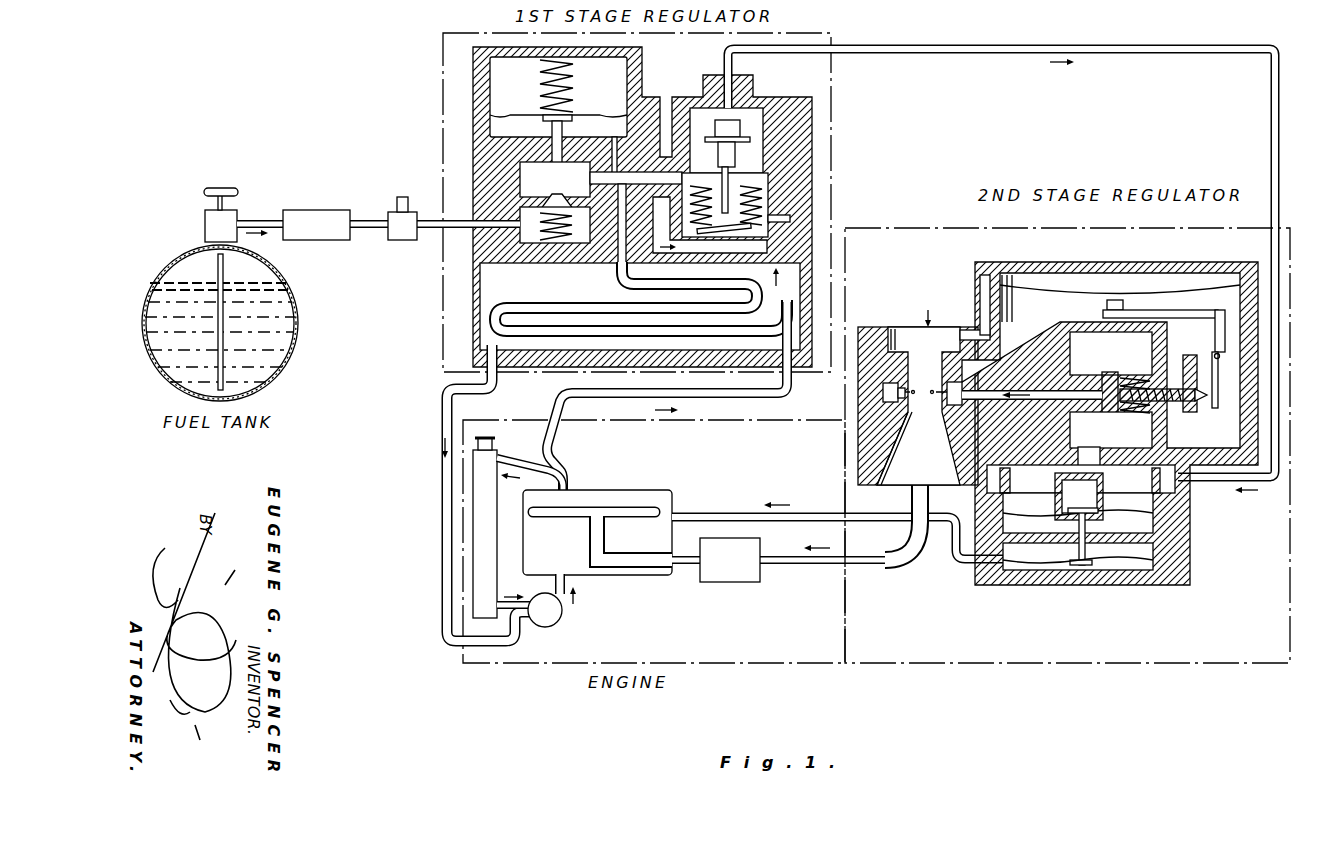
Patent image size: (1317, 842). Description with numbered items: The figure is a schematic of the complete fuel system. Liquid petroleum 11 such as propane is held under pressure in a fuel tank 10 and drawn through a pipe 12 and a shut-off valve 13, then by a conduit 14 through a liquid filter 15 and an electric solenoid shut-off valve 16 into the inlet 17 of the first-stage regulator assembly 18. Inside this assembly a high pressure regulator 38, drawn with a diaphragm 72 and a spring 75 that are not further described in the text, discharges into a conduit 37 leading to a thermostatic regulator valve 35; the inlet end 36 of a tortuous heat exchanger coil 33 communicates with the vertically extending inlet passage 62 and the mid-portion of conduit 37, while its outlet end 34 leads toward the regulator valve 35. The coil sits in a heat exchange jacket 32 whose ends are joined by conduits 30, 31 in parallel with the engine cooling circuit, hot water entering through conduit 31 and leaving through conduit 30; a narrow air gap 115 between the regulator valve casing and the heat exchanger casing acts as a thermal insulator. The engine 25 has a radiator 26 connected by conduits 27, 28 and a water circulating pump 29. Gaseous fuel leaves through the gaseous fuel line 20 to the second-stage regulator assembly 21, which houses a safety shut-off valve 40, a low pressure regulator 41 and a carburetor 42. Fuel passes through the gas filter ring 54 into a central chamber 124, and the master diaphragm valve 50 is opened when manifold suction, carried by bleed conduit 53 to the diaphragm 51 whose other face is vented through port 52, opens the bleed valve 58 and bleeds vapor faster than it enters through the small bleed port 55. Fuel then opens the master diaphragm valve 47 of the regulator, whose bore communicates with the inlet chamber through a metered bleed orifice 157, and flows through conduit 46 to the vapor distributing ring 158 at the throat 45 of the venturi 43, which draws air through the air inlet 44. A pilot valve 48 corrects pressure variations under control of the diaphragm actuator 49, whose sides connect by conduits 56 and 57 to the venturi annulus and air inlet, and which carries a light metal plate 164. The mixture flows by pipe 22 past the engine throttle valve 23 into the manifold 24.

The pressurized fuel tank 10 is at (292, 356).
The liquid petroleum 11 is at (283, 321).
The pipe 12 is at (223, 342).
The shut-off valve 13 is at (205, 218).
The conduit 14 is at (258, 215).
The liquid filter 15 is at (337, 210).
The electric solenoid shut-off valve 16 is at (409, 205).
The inlet 17 is at (457, 232).
The first-stage regulator assembly 18 is at (443, 47).
The gaseous fuel line 20 is at (960, 56).
The second-stage regulator assembly 21 is at (917, 228).
The pipe 22 is at (866, 566).
The engine throttle valve 23 is at (740, 565).
The manifold 24 is at (598, 502).
The internal combustion engine 25 is at (604, 580).
The radiator 26 is at (478, 528).
The conduit 27 is at (511, 462).
The conduit 28 is at (539, 624).
The water circulating pump 29 is at (566, 611).
The conduit 30 is at (447, 405).
The conduit 31 is at (603, 393).
The heat exchange jacket 32 is at (473, 318).
The tortuous conduit 33 is at (530, 305).
The end 34 is at (800, 222).
The thermostatic regulator valve 35 is at (815, 138).
The end 36 is at (614, 282).
The conduit 37 is at (612, 177).
The high pressure regulator 38 is at (648, 70).
The safety shut-off valve 40 is at (1190, 548).
The low pressure regulator 41 is at (1078, 335).
The carburetor 42 is at (858, 437).
The venturi 43 is at (858, 394).
The air inlet 44 is at (910, 335).
The throat 45 is at (924, 410).
The conduit 46 is at (1101, 432).
The master diaphragm valve 47 is at (1102, 360).
The pilot valve 48 is at (1195, 412).
The pressure sensitive diaphragm actuator 49 is at (1052, 296).
The master diaphragm valve 50 is at (1036, 504).
The diaphragm 51 is at (1118, 572).
The port 52 is at (1083, 585).
The bleed conduit 53 is at (950, 560).
The gas filter ring 54 is at (1152, 485).
The bleed port 55 is at (1097, 498).
The conduit 56 is at (946, 370).
The conduit 57 is at (985, 306).
The bleed valve 58 is at (1098, 510).
The inlet passage 62 is at (594, 262).
The diaphragm 72 is at (598, 112).
The spring 75 is at (540, 72).
The air gap 115 is at (695, 255).
The central chamber 124 is at (1022, 488).
The metered bleed orifice 157 is at (1120, 373).
The vapor distributing ring 158 is at (894, 446).
The light metal plate 164 is at (1112, 300).